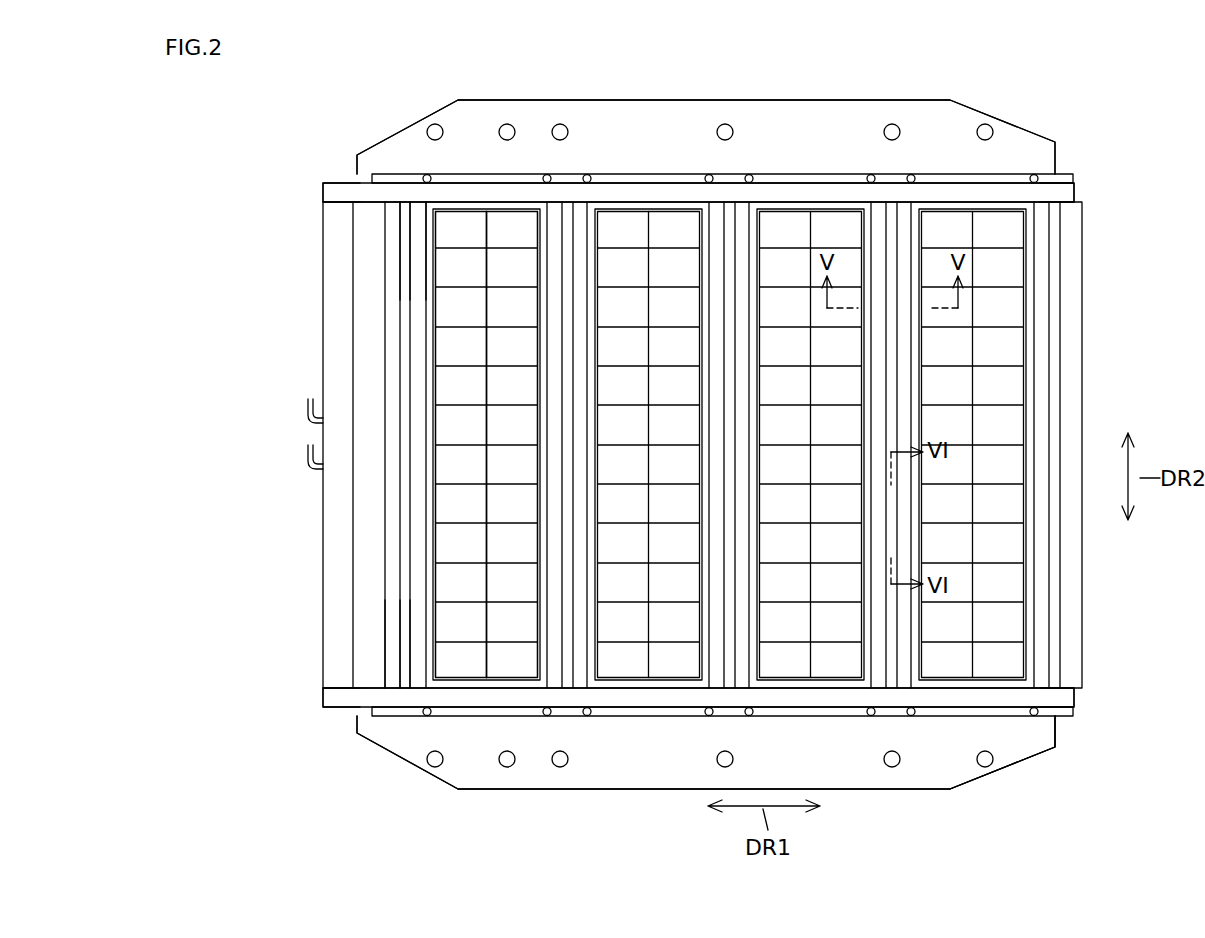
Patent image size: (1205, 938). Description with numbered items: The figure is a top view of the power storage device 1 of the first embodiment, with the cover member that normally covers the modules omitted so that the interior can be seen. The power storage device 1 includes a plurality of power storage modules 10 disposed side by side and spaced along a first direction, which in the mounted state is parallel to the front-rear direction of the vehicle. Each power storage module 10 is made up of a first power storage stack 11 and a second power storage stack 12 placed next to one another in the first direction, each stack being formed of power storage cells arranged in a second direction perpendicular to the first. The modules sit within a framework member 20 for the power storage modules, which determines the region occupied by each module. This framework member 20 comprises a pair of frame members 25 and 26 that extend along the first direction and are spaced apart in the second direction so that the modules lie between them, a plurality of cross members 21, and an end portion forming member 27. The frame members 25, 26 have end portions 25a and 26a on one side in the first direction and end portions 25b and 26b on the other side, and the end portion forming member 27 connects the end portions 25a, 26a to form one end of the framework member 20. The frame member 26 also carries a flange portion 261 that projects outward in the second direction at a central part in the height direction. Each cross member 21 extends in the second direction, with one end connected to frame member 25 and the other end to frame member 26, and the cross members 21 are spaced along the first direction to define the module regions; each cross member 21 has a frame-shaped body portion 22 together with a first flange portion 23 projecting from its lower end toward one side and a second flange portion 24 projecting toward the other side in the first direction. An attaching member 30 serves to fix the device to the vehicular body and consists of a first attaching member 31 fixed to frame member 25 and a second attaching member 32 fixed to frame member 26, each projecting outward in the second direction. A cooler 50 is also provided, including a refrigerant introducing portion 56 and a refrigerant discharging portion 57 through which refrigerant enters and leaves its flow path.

The power storage device 1 is at (1115, 110).
The power storage module 10 is at (448, 58).
The first power storage stack 11 is at (473, 200).
The second power storage stack 12 is at (514, 198).
The framework member for the power storage modules 20 is at (409, 166).
The cross member 21 is at (418, 213).
The body portion 22 is at (403, 682).
The first flange portion 23 is at (390, 682).
The second flange portion 24 is at (415, 682).
The frame member 25 is at (645, 190).
The end portion 25a is at (324, 192).
The end portion 25b is at (1075, 192).
The frame member 26 is at (640, 708).
The end portion 26a is at (324, 697).
The end portion 26b is at (1075, 697).
The flange portion 261 is at (1008, 722).
The end portion forming member 27 is at (324, 270).
The attaching member 30 is at (706, 445).
The first attaching member 31 is at (634, 178).
The second attaching member 32 is at (565, 790).
The cooler 50 is at (374, 333).
The refrigerant introducing portion 56 is at (306, 408).
The refrigerant discharging portion 57 is at (306, 454).